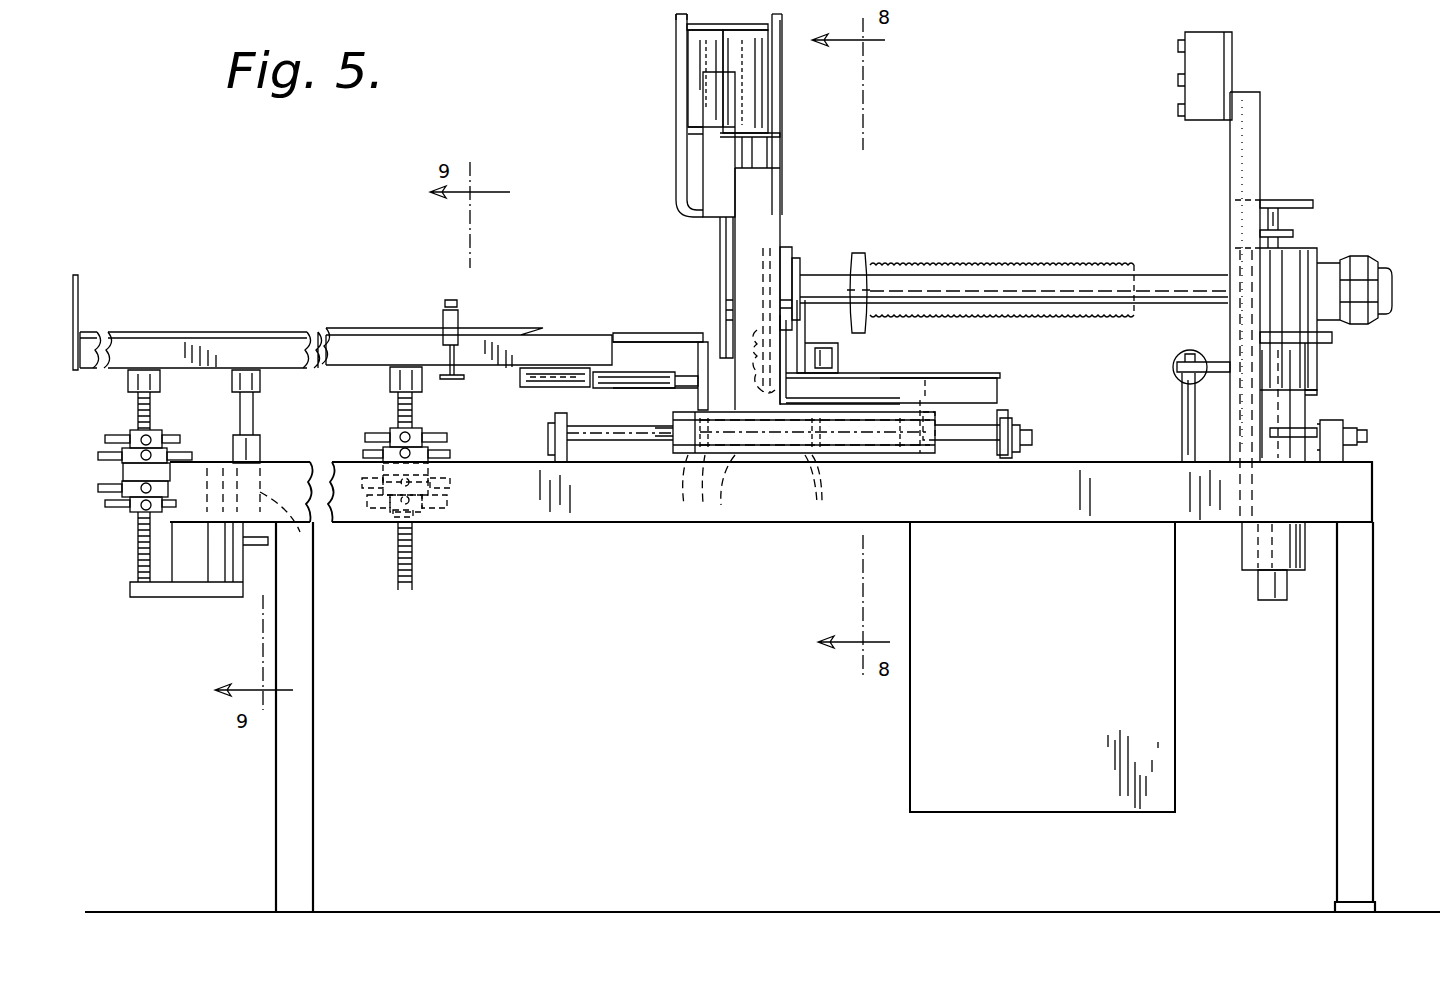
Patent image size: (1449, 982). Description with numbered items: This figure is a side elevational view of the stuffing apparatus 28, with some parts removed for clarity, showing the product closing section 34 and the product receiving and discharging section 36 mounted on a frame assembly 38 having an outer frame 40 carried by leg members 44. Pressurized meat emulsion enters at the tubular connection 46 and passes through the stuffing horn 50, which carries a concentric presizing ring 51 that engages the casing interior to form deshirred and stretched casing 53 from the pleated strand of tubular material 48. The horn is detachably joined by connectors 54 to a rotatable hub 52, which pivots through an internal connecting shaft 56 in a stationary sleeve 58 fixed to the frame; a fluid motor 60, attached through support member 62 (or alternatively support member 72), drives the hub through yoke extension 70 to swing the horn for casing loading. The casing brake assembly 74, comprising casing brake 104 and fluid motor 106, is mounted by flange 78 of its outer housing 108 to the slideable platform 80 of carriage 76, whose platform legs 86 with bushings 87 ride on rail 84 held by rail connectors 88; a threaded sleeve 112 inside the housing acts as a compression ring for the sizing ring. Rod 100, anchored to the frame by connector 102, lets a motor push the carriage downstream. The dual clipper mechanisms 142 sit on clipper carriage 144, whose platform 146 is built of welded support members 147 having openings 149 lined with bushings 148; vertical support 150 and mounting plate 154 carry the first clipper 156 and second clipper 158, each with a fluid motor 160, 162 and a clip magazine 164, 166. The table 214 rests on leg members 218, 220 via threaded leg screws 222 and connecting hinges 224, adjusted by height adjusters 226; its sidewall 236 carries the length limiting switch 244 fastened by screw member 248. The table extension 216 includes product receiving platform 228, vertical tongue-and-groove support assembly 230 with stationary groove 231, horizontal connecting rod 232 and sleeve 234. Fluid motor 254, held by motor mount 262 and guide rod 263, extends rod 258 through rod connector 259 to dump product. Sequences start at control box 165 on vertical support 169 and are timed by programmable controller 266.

The stuffing apparatus 28 is at (966, 192).
The product closing section 34 is at (648, 210).
The product receiving and discharging section 36 is at (336, 292).
The frame assembly 38 is at (740, 524).
The outer frame 40 is at (324, 467).
The leg members 44 is at (287, 848).
The tubular connection 46 is at (1362, 262).
The pleated strand of tubular material 48 is at (1110, 264).
The stuffing horn 50 is at (976, 280).
The presizing ring 51 is at (890, 266).
The rotatable hub 52 is at (1316, 262).
The deshirred and stretched casing 53 is at (817, 336).
The connectors 54 is at (1298, 218).
The internal connecting shaft 56 is at (1266, 588).
The stationary sleeve 58 is at (1248, 548).
The fluid motor 60 is at (1176, 358).
The support member 62 is at (1182, 396).
The yoke extension 70 is at (1200, 352).
The support member 72 is at (1184, 432).
The casing brake assembly 74 is at (808, 228).
The carriage 76 is at (1006, 384).
The flange 78 is at (819, 366).
The slideable platform 80 is at (947, 386).
The rail 84 is at (604, 440).
The platform legs 86 is at (974, 470).
The bushings 87 is at (822, 504).
The rail connectors 88 is at (560, 440).
The rod 100 is at (1294, 428).
The connector 102 is at (1336, 422).
The casing brake 104 is at (712, 262).
The fluid motor 106 is at (844, 374).
The outer housing 108 is at (792, 258).
The sleeve 112 is at (840, 260).
The dual clipper mechanisms 142 is at (710, 18).
The clipper carriage 144 is at (858, 454).
The platform 146 is at (778, 450).
The support members 147 is at (918, 398).
The bushings 148 is at (666, 446).
The openings 149 is at (694, 504).
The vertical support 150 is at (768, 184).
The mounting plate 154 is at (714, 184).
The first clipper 156 is at (666, 142).
The second clipper 158 is at (808, 152).
The fluid motor 160 is at (689, 88).
The fluid motor 162 is at (762, 82).
The magazine 164 is at (678, 40).
The control box 165 is at (1228, 42).
The magazine 166 is at (776, 50).
The vertical support 169 is at (1252, 108).
The table 214 is at (272, 312).
The table extension 216 is at (630, 318).
The leg member 218 is at (175, 400).
The leg member 220 is at (476, 446).
The threaded leg screw 222 is at (140, 568).
The connecting hinges 224 is at (128, 384).
The height adjusters 226 is at (108, 456).
The product receiving platform 228 is at (640, 328).
The vertical tongue-and-groove support assembly 230 is at (688, 354).
The stationary groove 231 is at (690, 390).
The horizontal connecting rod 232 is at (602, 382).
The sleeve 234 is at (526, 388).
The sidewall 236 is at (322, 366).
The length limiting switch 244 is at (444, 320).
The screw member 248 is at (452, 362).
The fluid motor 254 is at (304, 534).
The rod 258 is at (254, 407).
The rod connector 259 is at (260, 378).
The motor mount 262 is at (190, 586).
The guide rod 263 is at (212, 554).
The programmable controller 266 is at (970, 815).